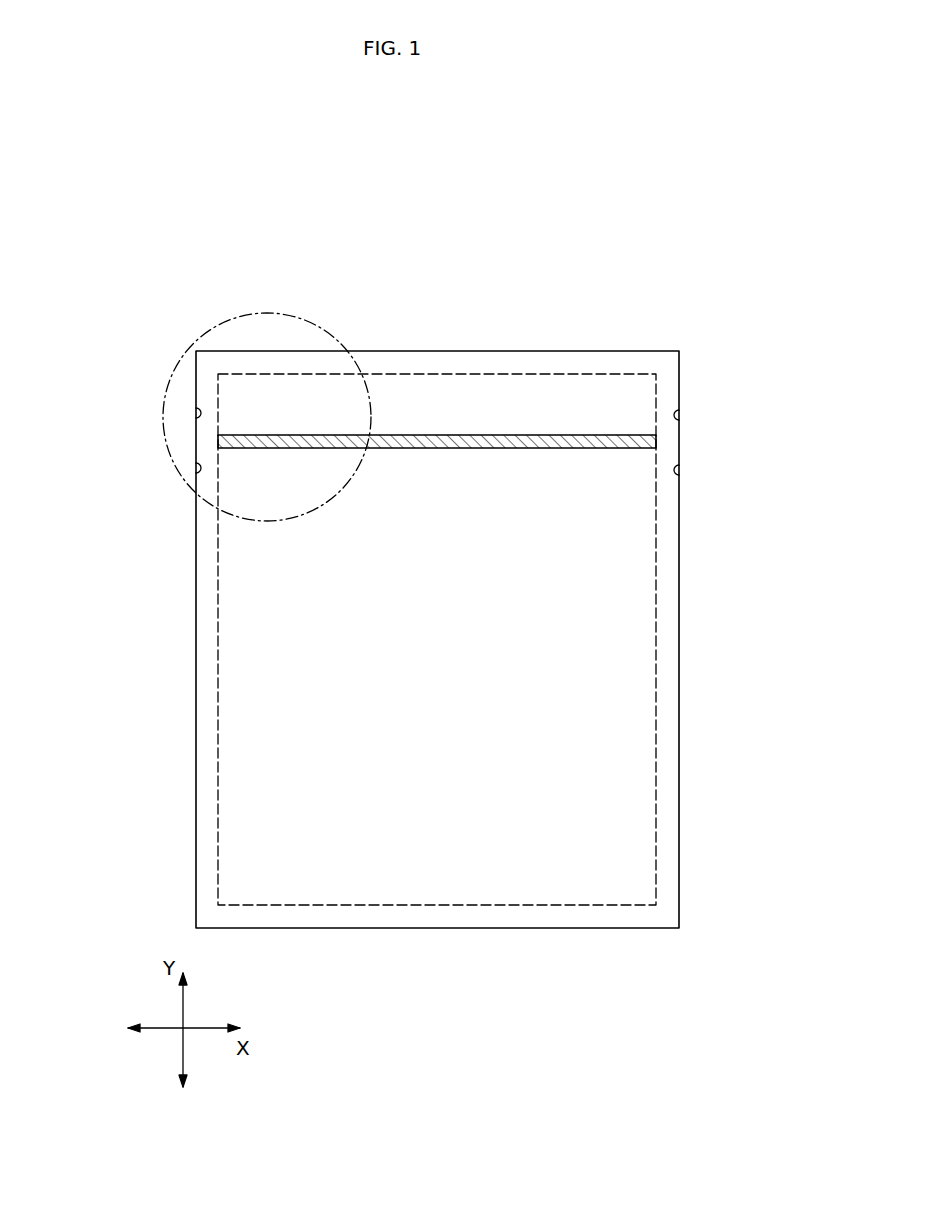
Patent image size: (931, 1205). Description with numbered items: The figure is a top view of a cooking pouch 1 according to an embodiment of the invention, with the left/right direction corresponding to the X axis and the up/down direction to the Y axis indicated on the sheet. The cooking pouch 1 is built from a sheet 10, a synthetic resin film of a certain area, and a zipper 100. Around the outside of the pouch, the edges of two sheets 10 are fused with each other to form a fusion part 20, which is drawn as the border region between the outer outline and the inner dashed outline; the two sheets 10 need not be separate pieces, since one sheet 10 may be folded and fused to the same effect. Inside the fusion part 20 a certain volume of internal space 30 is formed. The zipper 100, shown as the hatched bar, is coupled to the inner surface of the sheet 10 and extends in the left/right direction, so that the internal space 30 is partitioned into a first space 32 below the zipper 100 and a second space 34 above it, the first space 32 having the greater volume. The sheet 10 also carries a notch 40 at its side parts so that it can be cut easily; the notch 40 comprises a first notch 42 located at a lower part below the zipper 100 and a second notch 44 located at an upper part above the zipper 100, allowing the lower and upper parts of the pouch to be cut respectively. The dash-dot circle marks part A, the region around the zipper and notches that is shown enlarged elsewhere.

The cooking pouch 1 is at (643, 298).
The sheet 10 is at (643, 780).
The fusion part 20 is at (512, 362).
The internal space 30 is at (710, 448).
The first space 32 is at (685, 493).
The second space 34 is at (624, 403).
The notch 40 is at (138, 443).
The first notch 42 is at (194, 468).
The second notch 44 is at (194, 413).
The zipper 100 is at (414, 434).
The part A is at (232, 320).